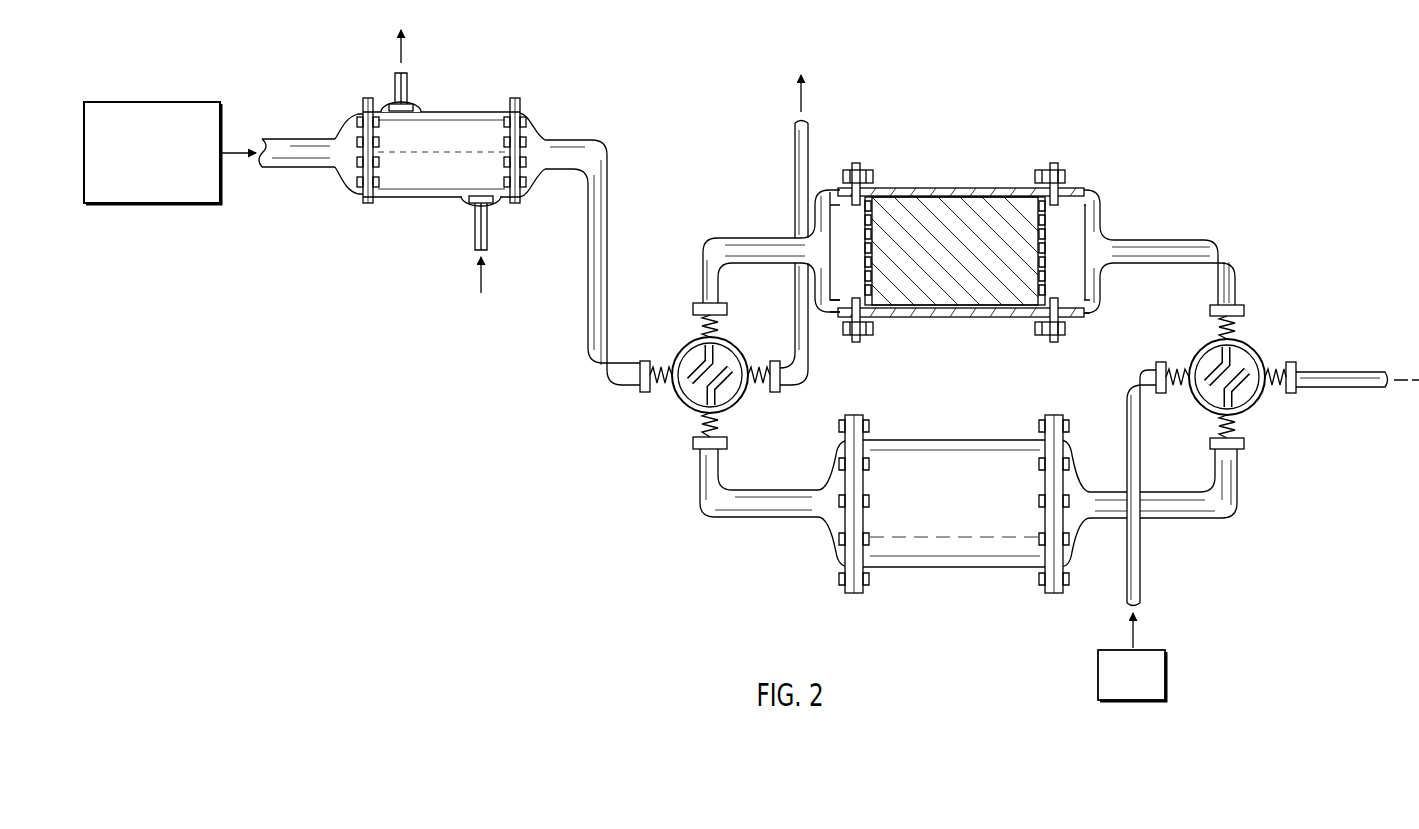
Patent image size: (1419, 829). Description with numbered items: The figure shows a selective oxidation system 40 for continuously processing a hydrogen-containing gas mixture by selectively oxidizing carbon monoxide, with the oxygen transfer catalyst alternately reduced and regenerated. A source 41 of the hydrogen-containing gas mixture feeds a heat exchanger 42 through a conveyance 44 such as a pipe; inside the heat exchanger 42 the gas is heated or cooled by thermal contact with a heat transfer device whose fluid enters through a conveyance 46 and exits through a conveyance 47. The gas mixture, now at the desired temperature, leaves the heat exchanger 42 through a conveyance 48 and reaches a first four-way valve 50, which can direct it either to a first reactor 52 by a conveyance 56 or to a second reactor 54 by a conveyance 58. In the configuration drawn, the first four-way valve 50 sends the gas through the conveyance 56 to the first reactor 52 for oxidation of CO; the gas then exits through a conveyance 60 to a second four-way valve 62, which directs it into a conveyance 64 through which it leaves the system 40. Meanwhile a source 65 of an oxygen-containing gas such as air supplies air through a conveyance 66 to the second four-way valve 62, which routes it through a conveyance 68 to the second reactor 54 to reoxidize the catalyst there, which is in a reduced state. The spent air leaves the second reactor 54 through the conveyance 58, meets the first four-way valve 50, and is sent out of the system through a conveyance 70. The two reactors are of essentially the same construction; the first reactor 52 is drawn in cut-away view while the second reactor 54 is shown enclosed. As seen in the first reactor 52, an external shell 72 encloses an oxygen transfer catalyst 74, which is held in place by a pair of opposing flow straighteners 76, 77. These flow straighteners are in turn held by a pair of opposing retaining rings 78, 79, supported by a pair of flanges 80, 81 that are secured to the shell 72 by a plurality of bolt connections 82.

The selective oxidation system 40 is at (720, 92).
The source of hydrogen-containing gas mixture 41 is at (172, 102).
The heat exchanger 42 is at (397, 198).
The conveyance 44 is at (278, 178).
The conveyance 46 is at (470, 232).
The conveyance 47 is at (410, 90).
The conveyance 48 is at (575, 138).
The first four-way valve 50 is at (680, 405).
The first reactor 52 is at (950, 239).
The second reactor 54 is at (918, 437).
The conveyance 56 is at (722, 238).
The conveyance 58 is at (745, 488).
The conveyance 60 is at (1160, 240).
The second four-way valve 62 is at (1258, 355).
The conveyance 64 is at (1340, 372).
The source of oxygen-containing gas 65 is at (1165, 675).
The conveyance 66 is at (1140, 585).
The conveyance 68 is at (1178, 520).
The conveyance 70 is at (812, 135).
The external shell 72 is at (953, 190).
The oxygen transfer catalyst 74 is at (940, 290).
The flow straightener 76 is at (836, 314).
The flow straightener 77 is at (1052, 318).
The retaining ring 78 is at (875, 197).
The retaining ring 79 is at (1038, 194).
The flange 80 is at (848, 172).
The flange 81 is at (1063, 170).
The bolt connections 82 is at (864, 168).